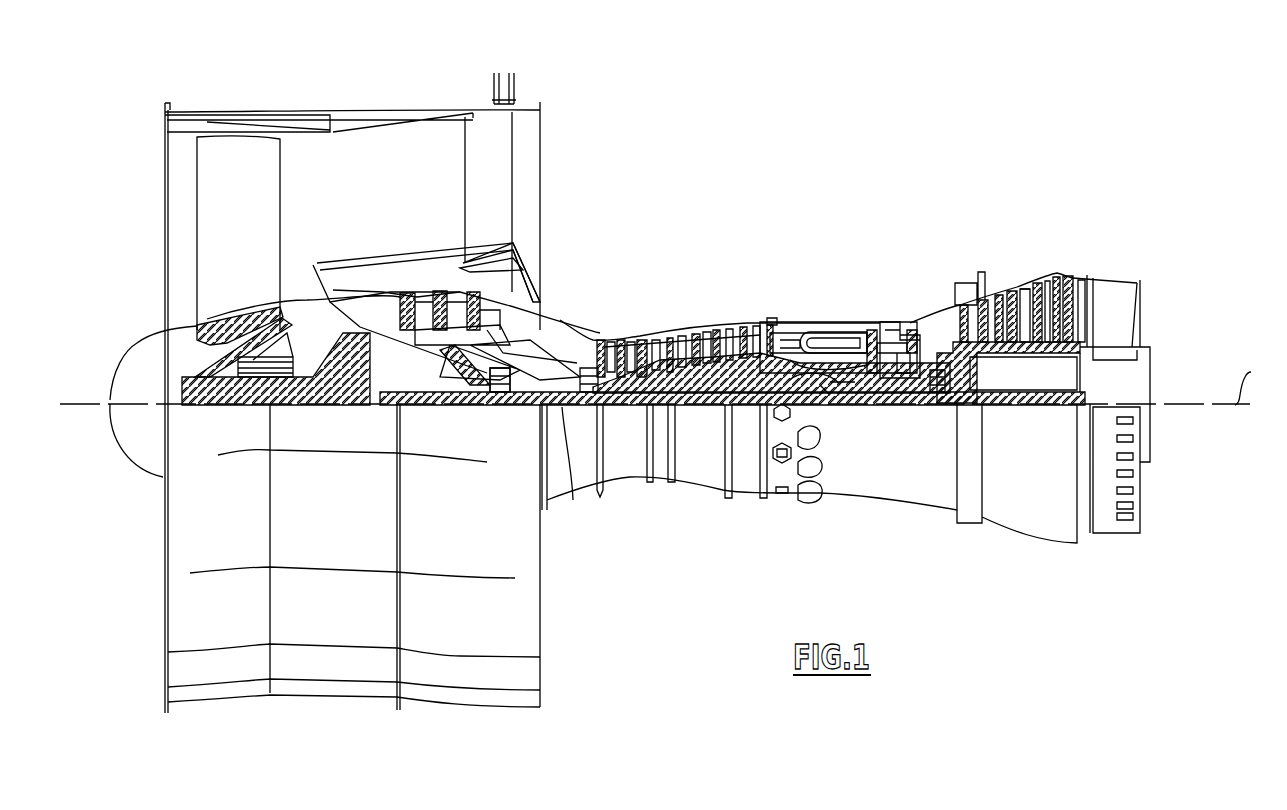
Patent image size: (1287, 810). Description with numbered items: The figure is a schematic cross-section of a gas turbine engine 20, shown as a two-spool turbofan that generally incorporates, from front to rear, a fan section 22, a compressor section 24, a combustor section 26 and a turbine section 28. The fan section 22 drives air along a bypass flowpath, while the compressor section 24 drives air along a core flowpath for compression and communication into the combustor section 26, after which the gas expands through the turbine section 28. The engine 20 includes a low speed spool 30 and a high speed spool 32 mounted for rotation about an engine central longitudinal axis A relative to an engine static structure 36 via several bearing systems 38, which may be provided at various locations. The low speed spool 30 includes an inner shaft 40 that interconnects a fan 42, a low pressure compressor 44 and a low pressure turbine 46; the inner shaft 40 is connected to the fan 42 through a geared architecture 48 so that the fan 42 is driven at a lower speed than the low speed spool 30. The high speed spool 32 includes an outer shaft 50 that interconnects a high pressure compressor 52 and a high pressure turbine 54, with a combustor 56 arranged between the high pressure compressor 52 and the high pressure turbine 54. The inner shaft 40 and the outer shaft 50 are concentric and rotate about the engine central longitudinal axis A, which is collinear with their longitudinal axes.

The gas turbine engine 20 is at (840, 157).
The fan section 22 is at (282, 106).
The compressor section 24 is at (591, 310).
The combustor section 26 is at (822, 302).
The turbine section 28 is at (973, 262).
The low speed spool 30 is at (703, 407).
The high speed spool 32 is at (742, 367).
The engine static structure 36 is at (745, 493).
The bearing systems 38 is at (500, 390).
The inner shaft 40 is at (560, 407).
The fan 42 is at (251, 246).
The low pressure compressor 44 is at (473, 300).
The low pressure turbine 46 is at (1020, 293).
The geared architecture 48 is at (362, 387).
The outer shaft 50 is at (813, 393).
The high pressure compressor 52 is at (673, 357).
The high pressure turbine 54 is at (893, 320).
The combustor 56 is at (822, 345).
The engine central longitudinal axis A is at (1252, 381).